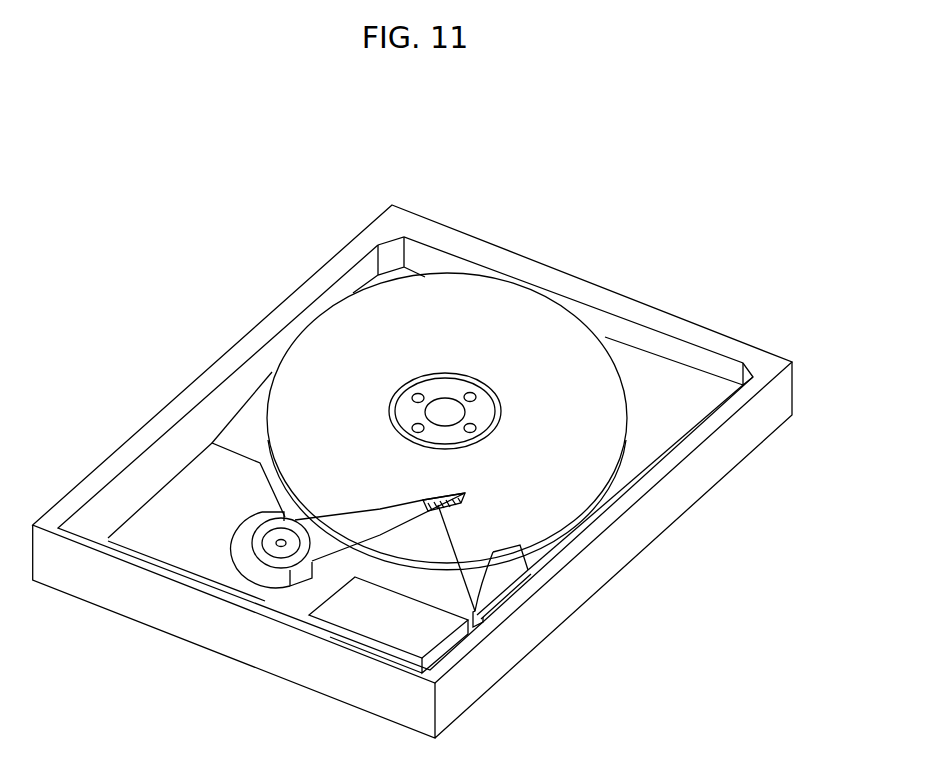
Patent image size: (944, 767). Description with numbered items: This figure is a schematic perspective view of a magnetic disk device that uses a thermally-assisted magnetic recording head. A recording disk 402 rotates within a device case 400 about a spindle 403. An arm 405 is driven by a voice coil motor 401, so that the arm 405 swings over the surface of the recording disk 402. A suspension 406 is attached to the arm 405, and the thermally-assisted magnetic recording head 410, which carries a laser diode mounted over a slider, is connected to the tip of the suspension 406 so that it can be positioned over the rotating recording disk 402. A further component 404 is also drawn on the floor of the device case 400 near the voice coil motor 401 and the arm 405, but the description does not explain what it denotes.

The device case 400 is at (683, 330).
The voice coil motor 401 is at (183, 533).
The recording disk 402 is at (343, 420).
The spindle 403 is at (473, 418).
The voice coil motor 404 is at (382, 620).
The arm 405 is at (330, 533).
The suspension 406 is at (480, 614).
The thermally-assisted magnetic recording head 410 is at (463, 497).